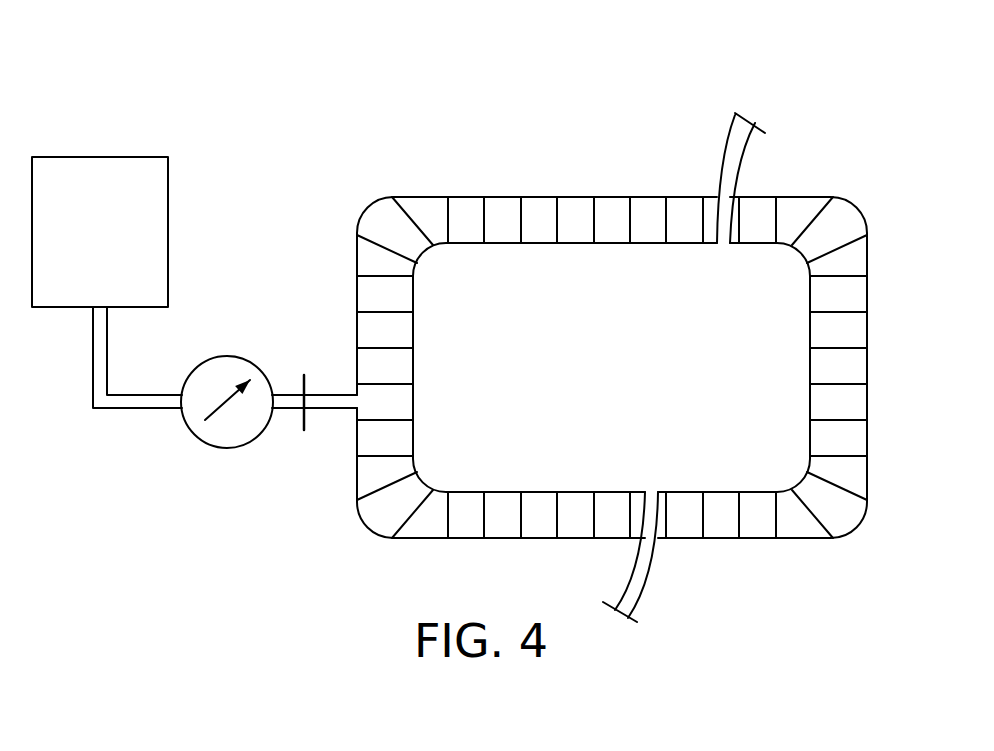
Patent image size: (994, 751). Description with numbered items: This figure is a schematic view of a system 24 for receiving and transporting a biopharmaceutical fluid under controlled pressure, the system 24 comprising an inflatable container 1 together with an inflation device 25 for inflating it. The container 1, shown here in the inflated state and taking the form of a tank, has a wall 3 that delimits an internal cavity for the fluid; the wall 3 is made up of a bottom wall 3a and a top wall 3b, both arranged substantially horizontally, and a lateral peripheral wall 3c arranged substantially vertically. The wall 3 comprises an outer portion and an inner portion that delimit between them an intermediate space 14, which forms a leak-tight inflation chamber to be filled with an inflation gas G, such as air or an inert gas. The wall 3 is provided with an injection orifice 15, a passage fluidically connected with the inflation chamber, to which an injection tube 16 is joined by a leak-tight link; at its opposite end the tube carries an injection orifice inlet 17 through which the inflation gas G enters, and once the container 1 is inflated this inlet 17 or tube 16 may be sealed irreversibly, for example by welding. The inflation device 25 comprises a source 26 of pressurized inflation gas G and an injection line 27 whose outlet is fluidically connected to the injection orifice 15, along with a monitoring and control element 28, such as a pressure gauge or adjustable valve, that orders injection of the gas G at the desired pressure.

The container 1 is at (870, 173).
The wall 3 is at (848, 335).
The bottom wall 3a is at (747, 540).
The top wall 3b is at (800, 197).
The lateral peripheral wall 3c is at (868, 405).
The inflation gas G is at (465, 213).
The intermediate space 14 is at (578, 217).
The injection orifice 15 is at (360, 403).
The injection tube 16 is at (323, 410).
The injection orifice inlet 17 is at (305, 380).
The system 24 is at (370, 117).
The inflation device 25 is at (216, 352).
The source of pressurized inflation gas 26 is at (116, 248).
The injection line 27 is at (133, 405).
The monitoring and control element 28 is at (200, 450).